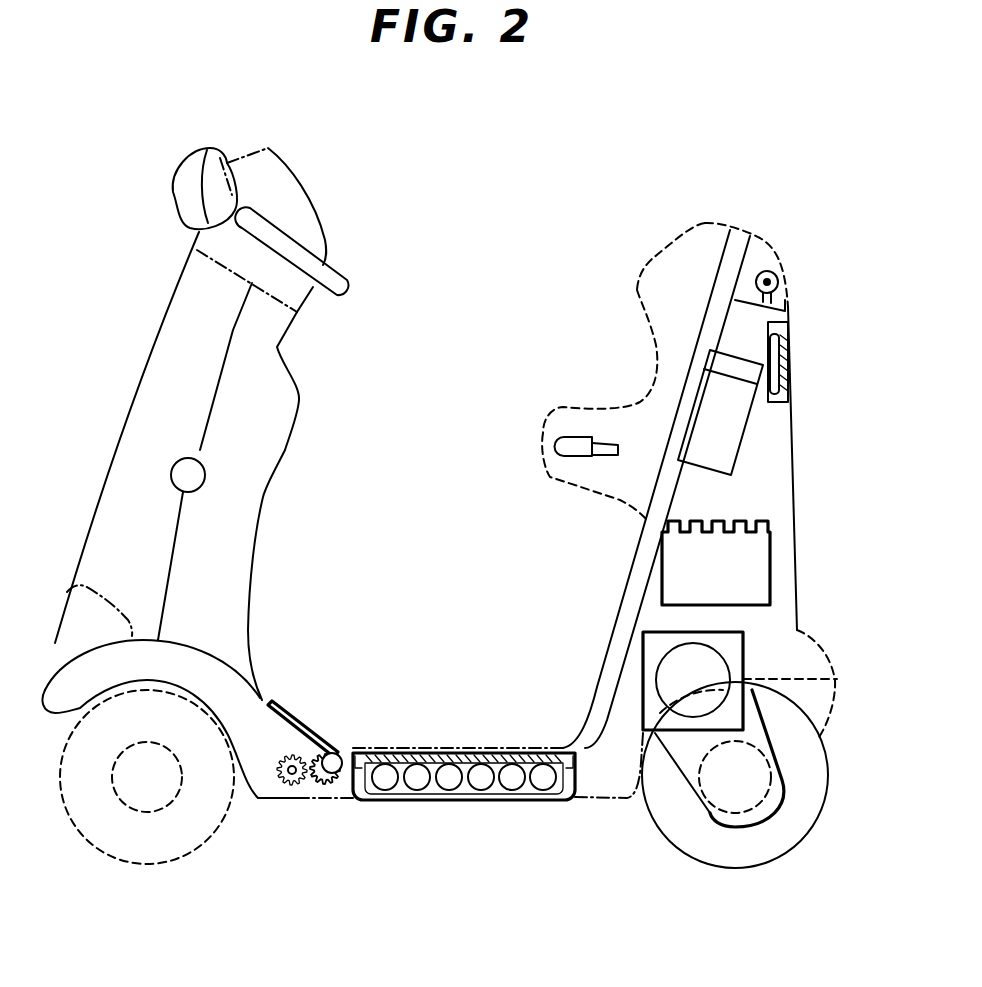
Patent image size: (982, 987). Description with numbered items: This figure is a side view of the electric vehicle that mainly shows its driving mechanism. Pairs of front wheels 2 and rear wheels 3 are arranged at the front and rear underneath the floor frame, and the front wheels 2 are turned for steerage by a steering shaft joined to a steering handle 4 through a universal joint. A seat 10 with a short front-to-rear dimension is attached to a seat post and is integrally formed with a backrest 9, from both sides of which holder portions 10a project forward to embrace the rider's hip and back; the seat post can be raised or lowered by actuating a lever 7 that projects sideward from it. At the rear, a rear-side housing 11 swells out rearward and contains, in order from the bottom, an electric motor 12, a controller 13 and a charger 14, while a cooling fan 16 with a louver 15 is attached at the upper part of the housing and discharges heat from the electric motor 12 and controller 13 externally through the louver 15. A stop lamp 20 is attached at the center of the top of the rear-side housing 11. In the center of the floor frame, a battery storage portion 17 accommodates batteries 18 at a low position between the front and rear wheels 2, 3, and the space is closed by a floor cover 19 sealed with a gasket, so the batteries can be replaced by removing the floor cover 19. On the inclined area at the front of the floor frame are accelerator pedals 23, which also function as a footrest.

The front wheels 2 is at (212, 806).
The rear wheels 3 is at (784, 826).
The steering handle 4 is at (348, 279).
The lever 7 is at (570, 450).
The backrest 9 is at (653, 290).
The seat 10 is at (543, 433).
The holder portions 10a is at (653, 258).
The rear-side housing 11 is at (797, 513).
The electric motor 12 is at (718, 655).
The controller 13 is at (762, 563).
The charger 14 is at (730, 440).
The louver 15 is at (790, 372).
The cooling fan 16 is at (790, 340).
The battery storage portion 17 is at (573, 783).
The batteries 18 is at (498, 786).
The floor cover 19 is at (453, 753).
The stop lamp 20 is at (783, 280).
The accelerator pedals 23 is at (300, 722).